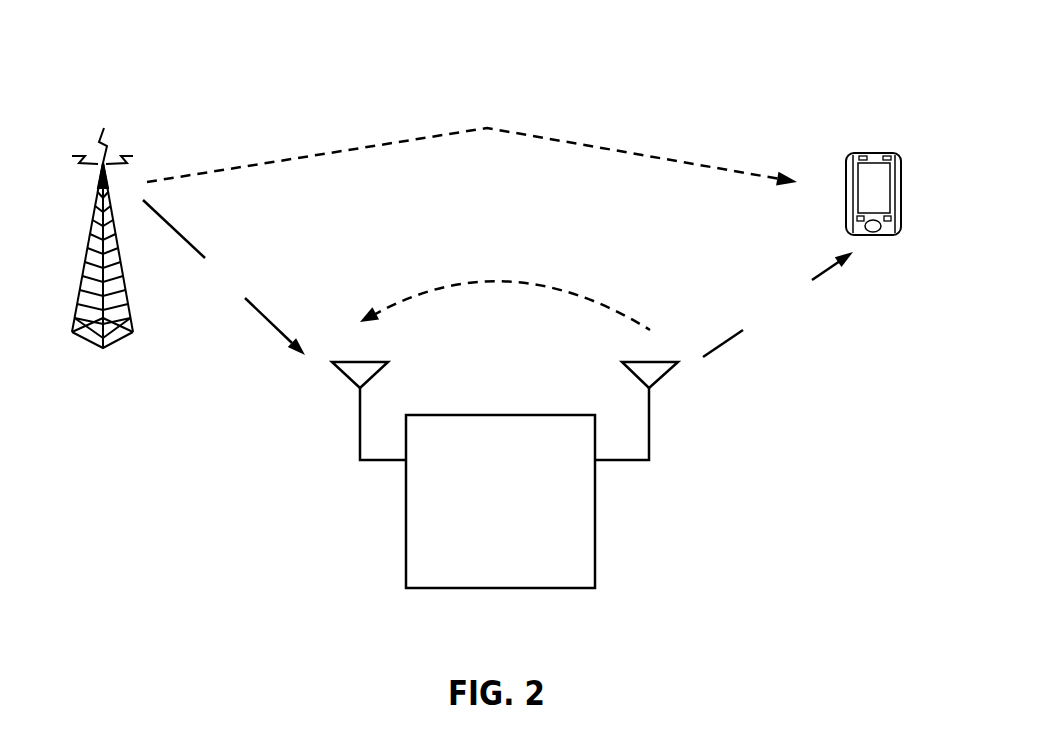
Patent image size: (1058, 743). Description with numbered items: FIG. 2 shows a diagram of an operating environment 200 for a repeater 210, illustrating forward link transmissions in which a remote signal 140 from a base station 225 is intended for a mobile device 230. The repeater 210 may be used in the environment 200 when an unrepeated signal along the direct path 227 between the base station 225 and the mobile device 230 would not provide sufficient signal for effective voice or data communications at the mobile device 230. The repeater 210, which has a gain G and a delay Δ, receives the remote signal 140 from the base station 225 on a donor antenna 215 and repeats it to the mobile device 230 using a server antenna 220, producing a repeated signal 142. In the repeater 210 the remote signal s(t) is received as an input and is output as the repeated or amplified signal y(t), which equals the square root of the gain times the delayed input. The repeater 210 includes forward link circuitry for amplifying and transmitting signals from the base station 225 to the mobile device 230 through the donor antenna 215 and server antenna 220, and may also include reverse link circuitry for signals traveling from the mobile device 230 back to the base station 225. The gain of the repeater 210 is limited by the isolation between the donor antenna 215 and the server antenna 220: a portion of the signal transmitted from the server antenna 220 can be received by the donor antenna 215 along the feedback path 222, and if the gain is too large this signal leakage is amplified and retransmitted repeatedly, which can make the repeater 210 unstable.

The operating environment 200 is at (792, 54).
The base station 225 is at (112, 347).
The remote signal 140 is at (186, 241).
The path 227 is at (605, 150).
The feedback path 222 is at (537, 285).
The donor antenna 215 is at (380, 370).
The server antenna 220 is at (632, 368).
The repeater 210 is at (522, 588).
The repeated signal 142 is at (820, 272).
The mobile device 230 is at (868, 153).